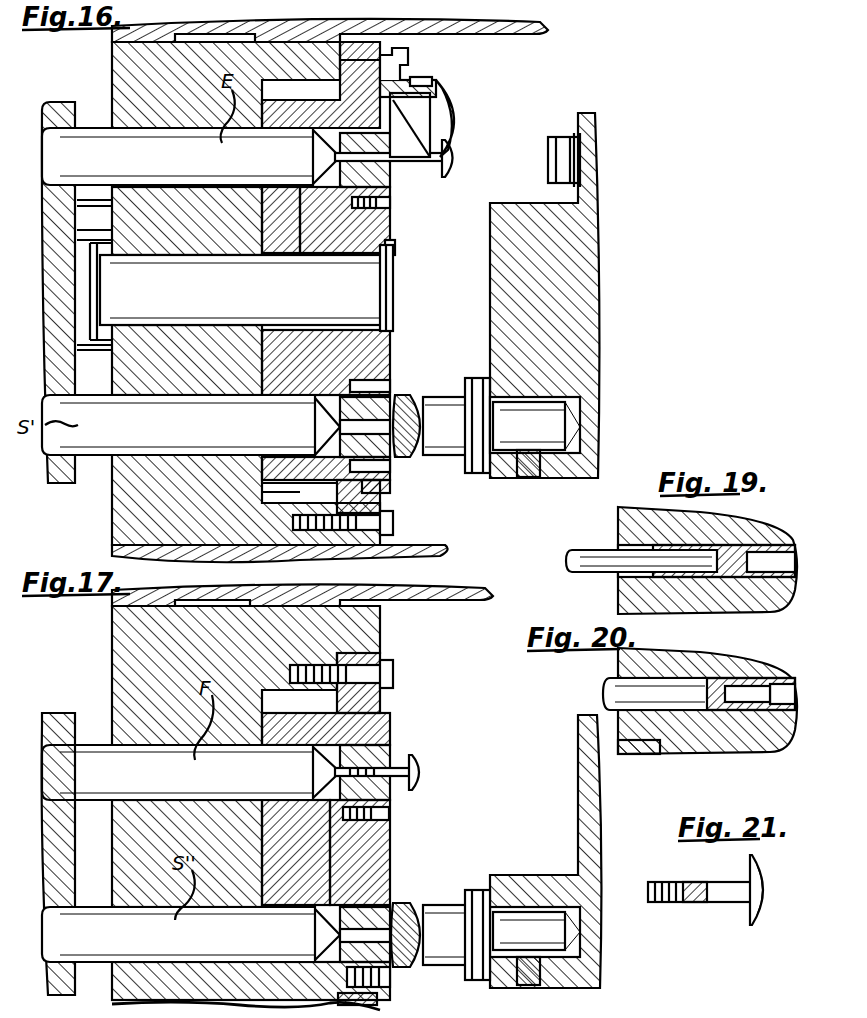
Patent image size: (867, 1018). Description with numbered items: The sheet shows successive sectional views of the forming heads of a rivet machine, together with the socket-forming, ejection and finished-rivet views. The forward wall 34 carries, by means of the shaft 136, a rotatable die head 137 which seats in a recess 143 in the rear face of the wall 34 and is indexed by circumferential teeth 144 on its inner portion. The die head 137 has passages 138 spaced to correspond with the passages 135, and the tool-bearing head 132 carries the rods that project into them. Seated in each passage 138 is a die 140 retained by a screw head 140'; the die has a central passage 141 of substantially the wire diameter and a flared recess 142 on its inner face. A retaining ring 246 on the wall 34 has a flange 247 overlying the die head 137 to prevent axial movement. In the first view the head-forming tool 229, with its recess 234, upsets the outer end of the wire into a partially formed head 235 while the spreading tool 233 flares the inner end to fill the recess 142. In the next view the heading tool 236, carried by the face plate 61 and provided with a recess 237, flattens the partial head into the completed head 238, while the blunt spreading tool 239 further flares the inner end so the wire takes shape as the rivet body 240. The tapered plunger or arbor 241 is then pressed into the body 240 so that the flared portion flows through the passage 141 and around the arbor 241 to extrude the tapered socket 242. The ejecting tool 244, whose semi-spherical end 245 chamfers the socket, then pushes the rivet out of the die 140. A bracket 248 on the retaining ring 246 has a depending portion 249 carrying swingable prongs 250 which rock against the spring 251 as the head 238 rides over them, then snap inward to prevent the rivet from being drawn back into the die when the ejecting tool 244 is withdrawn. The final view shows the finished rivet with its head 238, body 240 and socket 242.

In FIG. 16, the forward wall 34 is at (135, 497).
In FIG. 17, the forward wall 34 is at (120, 647).
In FIG. 16, the face plate 61 is at (490, 262).
In FIG. 17, the face plate 61 is at (578, 785).
In FIG. 16, the tool-bearing head 132 is at (57, 330).
In FIG. 16, the passages 135 is at (156, 402).
In FIG. 17, the passages 135 is at (110, 750).
In FIG. 16, the shaft 136 is at (375, 283).
In FIG. 16, the die head 137 is at (372, 238).
In FIG. 16, the passages 138 is at (285, 400).
In FIG. 16, the die 140 is at (398, 173).
In FIG. 17, the die 140 is at (397, 766).
In FIG. 20, the die 140 is at (707, 683).
In FIG. 16, the screw head 140' is at (408, 334).
In FIG. 17, the screw head 140' is at (409, 807).
In FIG. 16, the central passage 141 is at (330, 128).
In FIG. 16, the recess 142 is at (335, 140).
In FIG. 19, the recess 142 is at (620, 530).
In FIG. 16, the recess 143 is at (258, 372).
In FIG. 16, the circumferential teeth 144 is at (275, 497).
In FIG. 17, the circumferential teeth 144 is at (278, 700).
In FIG. 16, the head-forming tool 229 is at (437, 405).
In FIG. 16, the spreading tool 233 is at (333, 395).
In FIG. 16, the recess 234 is at (400, 460).
In FIG. 16, the partially formed head 235 is at (400, 396).
In FIG. 17, the heading tool 236 is at (443, 912).
In FIG. 17, the recess 237 is at (440, 910).
In FIG. 17, the completed head 238 is at (430, 771).
In FIG. 21, the completed head 238 is at (750, 925).
In FIG. 17, the blunt spreading tool 239 is at (335, 905).
In FIG. 17, the rivet body 240 is at (383, 892).
In FIG. 20, the rivet body 240 is at (785, 650).
In FIG. 17, the plunger or arbor 241 is at (390, 713).
In FIG. 19, the plunger or arbor 241 is at (700, 545).
In FIG. 20, the socket 242 is at (740, 740).
In FIG. 16, the ejecting tool 244 is at (318, 192).
In FIG. 20, the ejecting tool 244 is at (630, 757).
In FIG. 20, the semi-spherical end 245 is at (700, 740).
In FIG. 16, the retaining ring 246 is at (350, 547).
In FIG. 17, the retaining ring 246 is at (385, 690).
In FIG. 16, the flange 247 is at (330, 468).
In FIG. 16, the bracket 248 is at (400, 83).
In FIG. 16, the depending portion 249 is at (422, 103).
In FIG. 16, the swingable prongs 250 is at (452, 140).
In FIG. 16, the spring 251 is at (460, 98).